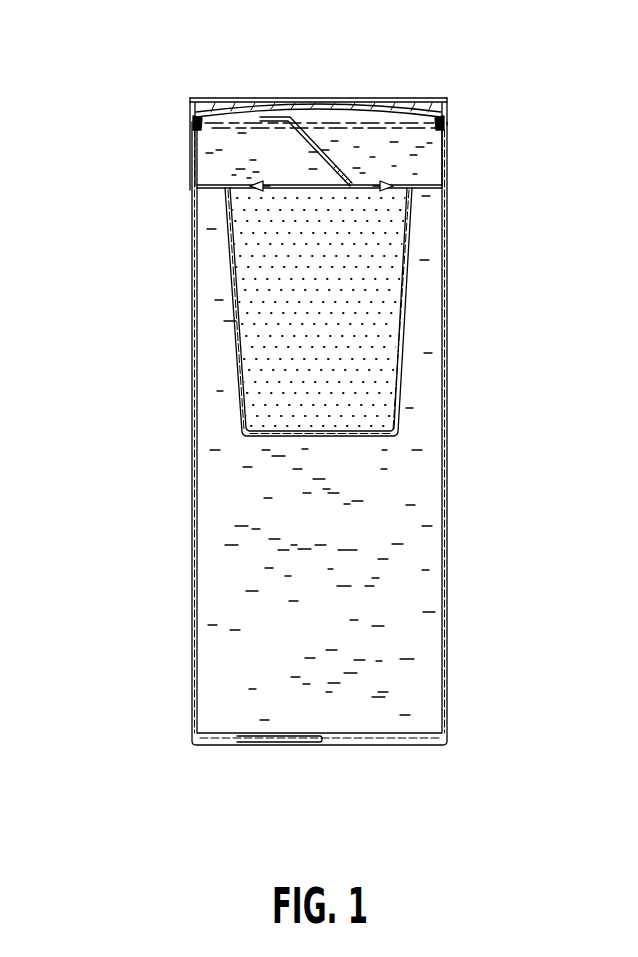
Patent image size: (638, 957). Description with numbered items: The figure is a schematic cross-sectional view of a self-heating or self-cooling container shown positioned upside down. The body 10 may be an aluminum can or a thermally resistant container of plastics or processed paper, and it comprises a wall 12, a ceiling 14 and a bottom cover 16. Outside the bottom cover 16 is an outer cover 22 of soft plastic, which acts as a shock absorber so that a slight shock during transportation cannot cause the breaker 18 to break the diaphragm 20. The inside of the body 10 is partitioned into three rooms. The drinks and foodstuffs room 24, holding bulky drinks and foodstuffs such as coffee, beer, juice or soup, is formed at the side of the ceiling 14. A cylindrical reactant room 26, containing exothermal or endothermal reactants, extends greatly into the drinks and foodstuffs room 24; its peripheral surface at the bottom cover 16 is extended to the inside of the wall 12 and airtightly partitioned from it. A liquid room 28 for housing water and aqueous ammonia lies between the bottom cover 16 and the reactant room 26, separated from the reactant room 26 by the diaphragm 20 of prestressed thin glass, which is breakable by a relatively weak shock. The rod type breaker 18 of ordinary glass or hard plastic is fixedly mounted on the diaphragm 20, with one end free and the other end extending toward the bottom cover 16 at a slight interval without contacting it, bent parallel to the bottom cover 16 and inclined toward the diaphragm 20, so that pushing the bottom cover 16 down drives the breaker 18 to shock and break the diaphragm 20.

The body 10 is at (310, 480).
The wall 12 is at (445, 622).
The ceiling 14 is at (340, 737).
The bottom cover 16 is at (318, 96).
The breaker 18 is at (343, 168).
The diaphragm 20 is at (322, 188).
The outer cover 22 is at (252, 97).
The drinks and foodstuffs room 24 is at (222, 583).
The reactant room 26 is at (258, 390).
The liquid room 28 is at (215, 153).